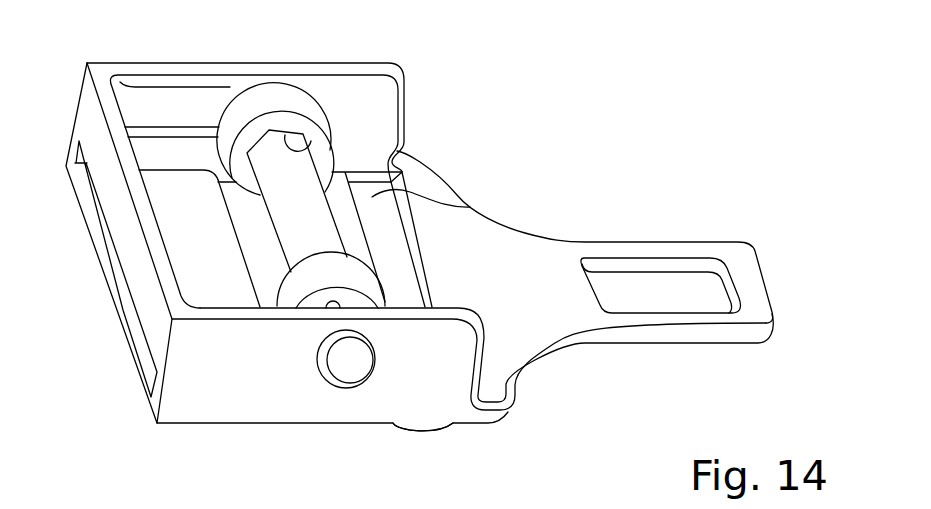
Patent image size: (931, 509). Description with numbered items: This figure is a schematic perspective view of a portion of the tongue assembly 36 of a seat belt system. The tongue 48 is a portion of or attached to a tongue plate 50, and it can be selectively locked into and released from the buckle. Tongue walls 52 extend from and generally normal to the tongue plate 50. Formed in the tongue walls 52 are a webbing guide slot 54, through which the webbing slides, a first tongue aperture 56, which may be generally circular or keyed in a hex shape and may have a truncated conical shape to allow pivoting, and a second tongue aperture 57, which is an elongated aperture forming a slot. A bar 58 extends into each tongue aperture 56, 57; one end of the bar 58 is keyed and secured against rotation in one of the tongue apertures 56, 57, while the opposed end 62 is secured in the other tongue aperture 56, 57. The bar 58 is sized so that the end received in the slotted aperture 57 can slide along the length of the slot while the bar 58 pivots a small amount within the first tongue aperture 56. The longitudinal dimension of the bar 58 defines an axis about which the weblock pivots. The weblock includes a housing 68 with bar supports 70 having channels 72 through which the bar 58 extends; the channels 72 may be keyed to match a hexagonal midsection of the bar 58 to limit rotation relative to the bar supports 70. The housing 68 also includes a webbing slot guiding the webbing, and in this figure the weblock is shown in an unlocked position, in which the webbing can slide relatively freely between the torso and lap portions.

The tongue assembly 36 is at (560, 100).
The tongue 48 is at (722, 343).
The tongue plate 50 is at (613, 240).
The tongue walls 52 is at (177, 62).
The webbing guide slot 54 is at (130, 330).
The first tongue aperture 56 is at (322, 367).
The second tongue aperture 57 is at (152, 83).
The bar 58 is at (270, 210).
The opposed end 62 is at (378, 342).
The housing 68 is at (433, 177).
The bar supports 70 is at (283, 72).
The channels 72 is at (330, 147).